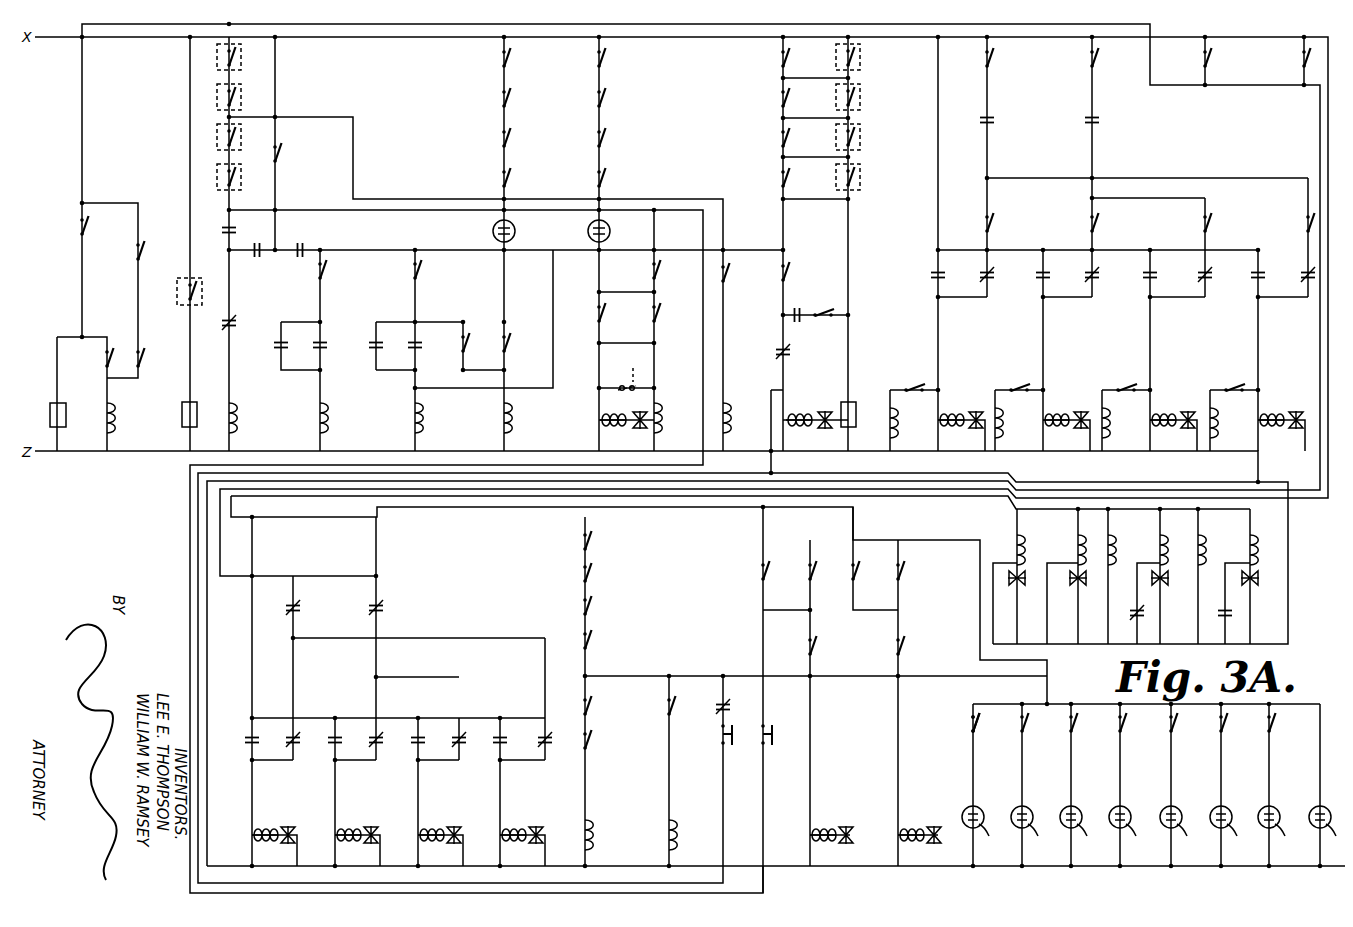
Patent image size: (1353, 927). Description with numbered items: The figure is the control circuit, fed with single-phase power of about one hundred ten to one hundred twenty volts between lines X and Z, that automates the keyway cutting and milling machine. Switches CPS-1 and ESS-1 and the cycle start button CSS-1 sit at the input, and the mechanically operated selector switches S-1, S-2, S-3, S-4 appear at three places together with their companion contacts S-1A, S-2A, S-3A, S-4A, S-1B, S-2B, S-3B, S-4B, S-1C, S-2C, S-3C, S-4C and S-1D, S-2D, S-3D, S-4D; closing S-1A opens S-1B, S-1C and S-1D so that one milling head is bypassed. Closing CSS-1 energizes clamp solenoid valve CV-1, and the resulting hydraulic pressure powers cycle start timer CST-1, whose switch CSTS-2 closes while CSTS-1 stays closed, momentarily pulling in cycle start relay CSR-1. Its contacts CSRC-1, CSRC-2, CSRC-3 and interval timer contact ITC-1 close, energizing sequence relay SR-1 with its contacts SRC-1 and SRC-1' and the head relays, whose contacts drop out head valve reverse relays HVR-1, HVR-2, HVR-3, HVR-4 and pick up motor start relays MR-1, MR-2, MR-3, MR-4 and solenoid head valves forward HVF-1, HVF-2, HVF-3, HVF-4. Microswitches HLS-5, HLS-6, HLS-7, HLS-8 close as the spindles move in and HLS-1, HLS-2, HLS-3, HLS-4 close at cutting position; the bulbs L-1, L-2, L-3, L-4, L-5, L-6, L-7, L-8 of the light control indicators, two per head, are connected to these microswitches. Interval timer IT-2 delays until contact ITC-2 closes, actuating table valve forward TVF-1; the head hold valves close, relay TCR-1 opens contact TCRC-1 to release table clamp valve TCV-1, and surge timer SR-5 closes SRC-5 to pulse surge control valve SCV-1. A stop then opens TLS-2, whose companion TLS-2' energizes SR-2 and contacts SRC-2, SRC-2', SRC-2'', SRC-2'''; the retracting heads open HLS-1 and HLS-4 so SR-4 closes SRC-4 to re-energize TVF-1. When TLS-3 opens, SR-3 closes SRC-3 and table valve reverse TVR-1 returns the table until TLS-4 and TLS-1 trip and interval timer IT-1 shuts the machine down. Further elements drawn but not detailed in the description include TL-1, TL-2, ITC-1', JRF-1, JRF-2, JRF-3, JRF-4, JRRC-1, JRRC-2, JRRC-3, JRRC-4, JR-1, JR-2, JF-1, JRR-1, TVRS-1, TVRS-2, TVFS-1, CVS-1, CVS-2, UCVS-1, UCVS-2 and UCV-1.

The micro head limit switch HLS-1 is at (968, 728).
The micro head limit switch HLS-2 is at (611, 449).
The micro head limit switch HLS-3 is at (635, 469).
The micro head limit switch HLS-4 is at (660, 429).
The micro head limit switch HLS-5 is at (994, 410).
The micro head limit switch HLS-6 is at (1019, 430).
The micro head limit switch HLS-7 is at (1044, 450).
The micro head limit switch HLS-8 is at (1068, 470).
The emergency stop switch ESS-1 is at (298, 153).
The control power switch CPS-1 is at (55, 227).
The cycle start button CSS-1 is at (429, 414).
The cycle start relay contact CSRC-1 is at (222, 235).
The sequence relay contact SRC-1 is at (255, 260).
The sequence relay contact SRC-1' is at (328, 241).
The microswitch TLS-1 is at (177, 292).
The microswitch TLS-2 is at (343, 267).
The microswitch TLS-3 is at (435, 275).
The microswitch TLS-4 is at (604, 378).
The microswitch TLS-2' is at (455, 354).
The interval timer contact ITC-1 is at (252, 314).
The interval timer contact ITC-2 is at (803, 349).
The interval timer contact ITC-1' is at (853, 598).
The cycle start relay contact CSRC-2 is at (274, 350).
The cycle start relay contact CSRC-3 is at (370, 350).
The sequence relay contact SRC-2 is at (521, 354).
The sequence relay contact SRC-2' is at (635, 276).
The sequence relay contact SRC-2'' is at (740, 285).
The sequence relay contact SRC-2''' is at (817, 306).
The sequence relay contact SRC-3 is at (672, 324).
The sequence relay contact SRC-4 is at (805, 275).
The surge relay contact SRC-5 is at (1233, 618).
The cycle start timer switch CSTS-1 is at (87, 364).
The cycle start timer switch CSTS-2 is at (144, 368).
The cycle start timer CST-1 is at (74, 416).
The cycle start relay CSR-1 is at (128, 421).
The interval timer IT-1 is at (197, 412).
The interval timer IT-2 is at (856, 412).
The sequence relay SR-1 is at (253, 418).
The sequence relay SR-2 is at (528, 418).
The sequence relay SR-3 is at (671, 421).
The sequence relay SR-4 is at (740, 421).
The surge timer SR-5 is at (1226, 564).
The selector switch S-1 is at (566, 299).
The selector switch S-2 is at (566, 335).
The selector switch S-3 is at (566, 372).
The selector switch S-4 is at (566, 409).
The selector switch contact S-1A is at (762, 58).
The selector switch contact S-2A is at (762, 98).
The selector switch contact S-3A is at (762, 138).
The selector switch contact S-4A is at (762, 178).
The selector switch contact S-1B is at (1006, 58).
The selector switch contact S-2B is at (1111, 58).
The selector switch contact S-3B is at (1210, 68).
The selector switch contact S-4B is at (1302, 62).
The selector switch contact S-1C is at (1006, 224).
The selector switch contact S-2C is at (1073, 224).
The selector switch contact S-3C is at (1186, 224).
The selector switch contact S-4C is at (1285, 224).
The selector switch contact S-1D is at (914, 386).
The selector switch contact S-2D is at (1011, 379).
The selector switch contact S-3D is at (1118, 379).
The selector switch contact S-4D is at (1226, 379).
The timer lamp TL-1 is at (520, 231).
The timer lamp TL-2 is at (615, 231).
The solenoid table valve reverse TVR-1 is at (623, 430).
The solenoid table valve forward TVF-1 is at (809, 430).
The jet relay JRF-1 is at (789, 558).
The jet relay JRF-2 is at (1067, 292).
The jet relay JRF-3 is at (1177, 292).
The jet relay JRF-4 is at (1283, 292).
The motor start relay MR-1 is at (906, 423).
The motor start relay MR-2 is at (1011, 423).
The motor start relay MR-3 is at (1118, 423).
The motor start relay MR-4 is at (1226, 423).
The solenoid head valve forward HVF-1 is at (961, 430).
The solenoid head valve forward HVF-2 is at (1066, 430).
The solenoid head valve forward HVF-3 is at (1173, 430).
The solenoid head valve forward HVF-4 is at (1280, 430).
The relay TCR-1 is at (1138, 562).
The table clamp valve TCV-1 is at (1153, 584).
The table clamp valve relay contact TCRC-1 is at (1145, 618).
The surge control valve SCV-1 is at (1244, 584).
The jet relay contact JRRC-1 is at (274, 757).
The jet relay contact JRRC-2 is at (359, 757).
The jet relay contact JRRC-3 is at (441, 757).
The jet relay contact JRRC-4 is at (525, 757).
The head valve reverse relay HVR-1 is at (276, 844).
The head valve reverse relay HVR-2 is at (359, 844).
The head valve reverse relay HVR-3 is at (443, 844).
The head valve reverse relay HVR-4 is at (525, 844).
The jet relay contact JR-1 is at (590, 712).
The jet relay contact JR-2 is at (668, 712).
The jet contact JF-1 is at (590, 746).
The jet relay coil JRR-1 is at (689, 838).
The timer valve relay switch TVRS-1 is at (717, 710).
The timer valve relay switch TVRS-2 is at (766, 736).
The timer valve switch TVFS-1 is at (720, 737).
The control valve switch CVS-1 is at (804, 572).
The control valve switch CVS-2 is at (921, 647).
The control valve switch UCVS-1 is at (778, 647).
The control valve switch UCVS-2 is at (926, 574).
The clamp solenoid valve CV-1 is at (831, 844).
The control valve UCV-1 is at (920, 844).
The bulb L-1 is at (980, 828).
The bulb L-2 is at (1029, 828).
The bulb L-3 is at (1078, 828).
The bulb L-4 is at (1127, 828).
The bulb L-5 is at (1178, 828).
The bulb L-6 is at (1228, 828).
The bulb L-7 is at (1276, 828).
The bulb L-8 is at (1327, 828).